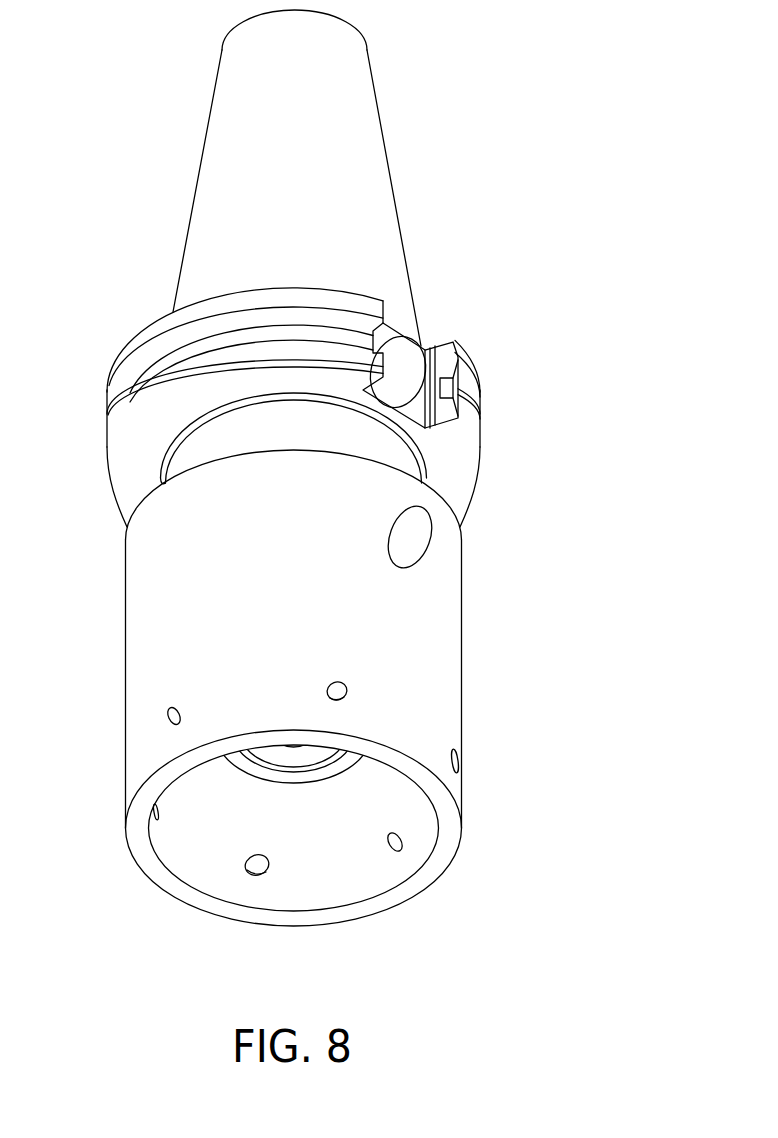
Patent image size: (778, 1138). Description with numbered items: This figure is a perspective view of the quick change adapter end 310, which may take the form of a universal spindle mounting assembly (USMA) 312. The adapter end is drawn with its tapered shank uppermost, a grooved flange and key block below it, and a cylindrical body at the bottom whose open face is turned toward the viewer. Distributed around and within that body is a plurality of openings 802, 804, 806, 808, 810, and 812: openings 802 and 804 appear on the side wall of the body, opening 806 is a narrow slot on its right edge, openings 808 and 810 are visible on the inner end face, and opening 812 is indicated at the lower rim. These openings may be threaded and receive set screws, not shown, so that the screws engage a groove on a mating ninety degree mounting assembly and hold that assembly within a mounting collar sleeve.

The quick change adapter end 310 is at (461, 150).
The universal spindle mounting assembly 312 is at (189, 224).
The opening 802 is at (183, 711).
The opening 804 is at (349, 692).
The opening 806 is at (459, 763).
The opening 808 is at (388, 848).
The opening 810 is at (253, 856).
The opening 812 is at (123, 798).